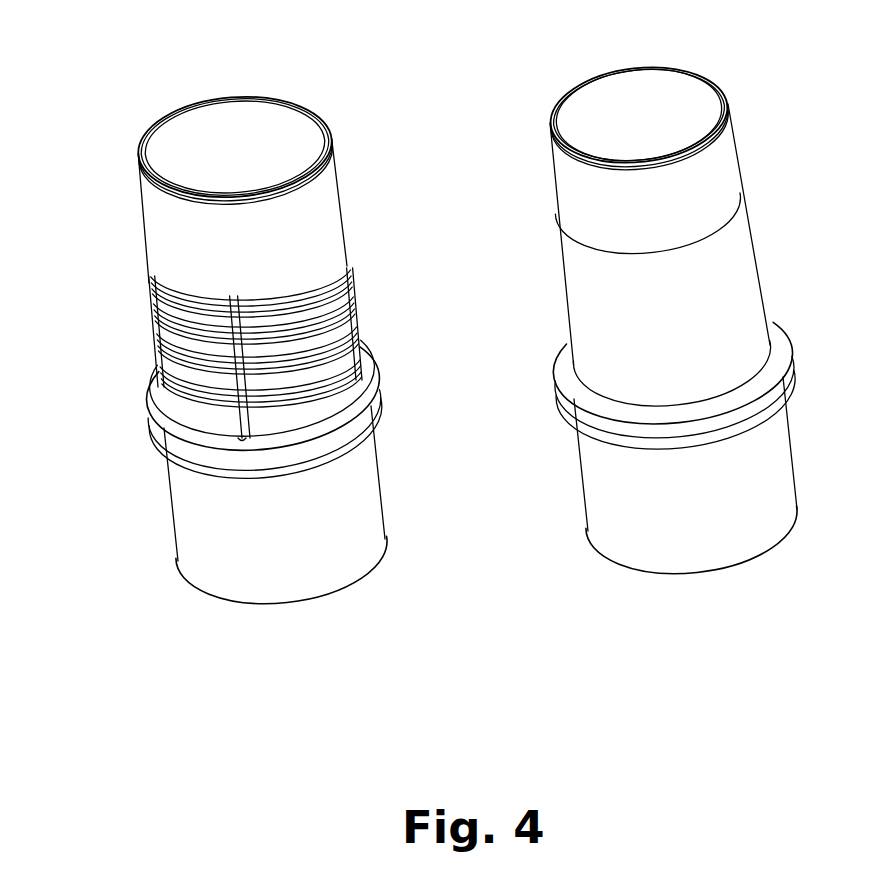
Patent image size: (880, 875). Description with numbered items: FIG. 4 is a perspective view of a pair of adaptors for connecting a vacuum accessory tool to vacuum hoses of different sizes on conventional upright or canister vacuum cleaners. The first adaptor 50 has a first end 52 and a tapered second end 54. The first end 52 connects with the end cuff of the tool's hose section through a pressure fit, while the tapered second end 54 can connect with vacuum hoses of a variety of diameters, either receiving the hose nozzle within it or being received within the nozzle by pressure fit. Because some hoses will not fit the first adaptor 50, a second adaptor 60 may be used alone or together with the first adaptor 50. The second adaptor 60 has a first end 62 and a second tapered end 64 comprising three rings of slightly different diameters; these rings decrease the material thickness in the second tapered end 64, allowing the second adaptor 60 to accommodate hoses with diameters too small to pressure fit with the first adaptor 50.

The first adaptor 50 is at (636, 329).
The first end 52 is at (703, 570).
The tapered second end 54 is at (580, 197).
The second adaptor 60 is at (222, 364).
The first end 62 is at (292, 603).
The second tapered end 64 is at (163, 253).